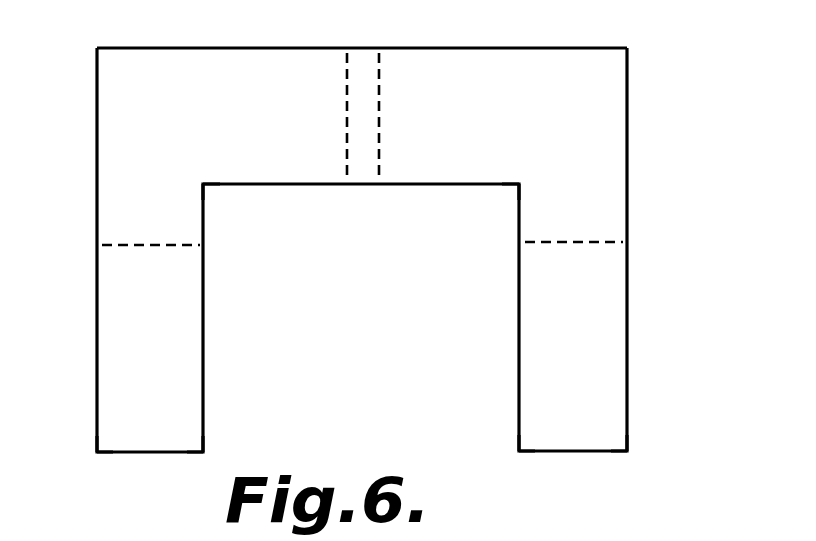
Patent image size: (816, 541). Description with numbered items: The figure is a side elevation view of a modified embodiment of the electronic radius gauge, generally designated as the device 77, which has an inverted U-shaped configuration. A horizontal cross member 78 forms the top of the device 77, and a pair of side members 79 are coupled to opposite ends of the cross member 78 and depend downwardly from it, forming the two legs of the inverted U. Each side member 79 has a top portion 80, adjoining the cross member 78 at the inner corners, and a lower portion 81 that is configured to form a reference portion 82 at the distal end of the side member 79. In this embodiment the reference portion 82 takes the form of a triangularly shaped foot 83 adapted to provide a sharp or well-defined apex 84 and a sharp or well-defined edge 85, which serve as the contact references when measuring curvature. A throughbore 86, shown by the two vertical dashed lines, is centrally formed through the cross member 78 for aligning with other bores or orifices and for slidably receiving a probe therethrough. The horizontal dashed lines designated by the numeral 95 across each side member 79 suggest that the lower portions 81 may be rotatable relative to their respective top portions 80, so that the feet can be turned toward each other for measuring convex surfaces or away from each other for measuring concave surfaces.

The modified embodiment of the electronic radius gauge 77 is at (660, 139).
The cross member 78 is at (448, 48).
The side member 79 is at (97, 375).
The top portion 80 is at (203, 207).
The lower portion 81 is at (203, 392).
The reference portion 82 is at (163, 454).
The triangularly shaped foot 83 is at (195, 455).
The apex 84 is at (100, 452).
The edge 85 is at (520, 450).
The throughbore 86 is at (345, 80).
The dashed lines 95 is at (175, 247).